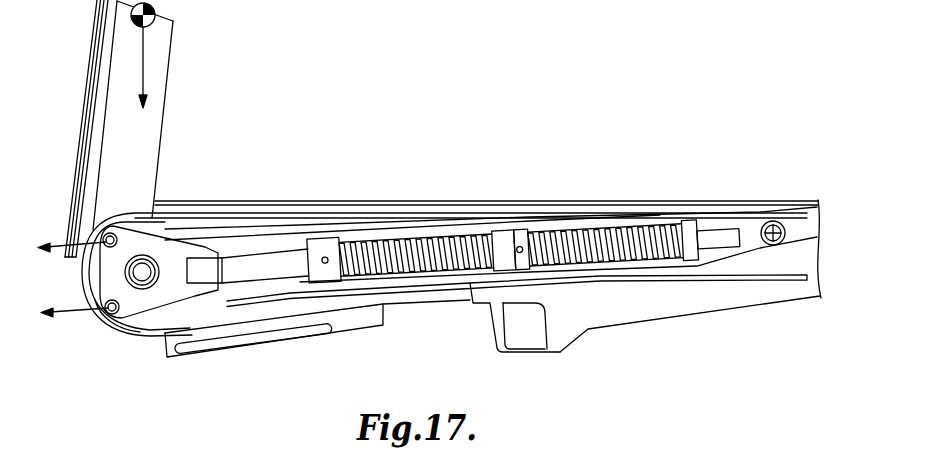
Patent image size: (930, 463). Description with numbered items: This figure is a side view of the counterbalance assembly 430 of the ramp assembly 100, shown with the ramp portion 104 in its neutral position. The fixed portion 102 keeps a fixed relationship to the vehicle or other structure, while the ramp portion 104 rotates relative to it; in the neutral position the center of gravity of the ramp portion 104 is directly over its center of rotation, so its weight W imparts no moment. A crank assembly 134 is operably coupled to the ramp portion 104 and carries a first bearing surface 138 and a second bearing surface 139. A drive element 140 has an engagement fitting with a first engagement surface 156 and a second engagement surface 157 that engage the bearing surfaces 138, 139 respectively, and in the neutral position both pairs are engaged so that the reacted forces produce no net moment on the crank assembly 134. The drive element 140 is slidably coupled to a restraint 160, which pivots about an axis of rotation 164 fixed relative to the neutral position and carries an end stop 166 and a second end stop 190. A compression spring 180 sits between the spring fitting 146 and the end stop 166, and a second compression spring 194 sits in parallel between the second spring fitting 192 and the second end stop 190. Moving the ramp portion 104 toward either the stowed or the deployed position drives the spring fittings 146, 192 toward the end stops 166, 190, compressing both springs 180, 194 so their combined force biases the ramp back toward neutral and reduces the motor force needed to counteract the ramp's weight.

The ramp assembly 100 is at (574, 121).
The fixed portion 102 is at (667, 310).
The ramp portion 104 is at (171, 60).
The crank assembly 134 is at (82, 314).
The first bearing surface 138 is at (150, 228).
The second bearing surface 139 is at (125, 323).
The drive element 140 is at (229, 256).
The spring fitting 146 is at (320, 244).
The first engagement surface 156 is at (107, 235).
The second engagement surface 157 is at (106, 315).
The restraint 160 is at (728, 256).
The axis of rotation 164 is at (777, 247).
The end stop 166 is at (498, 237).
The compression spring 180 is at (398, 240).
The second end stop 190 is at (685, 224).
The second spring fitting 192 is at (520, 233).
The second compression spring 194 is at (592, 228).
The counterbalance assembly 430 is at (459, 316).